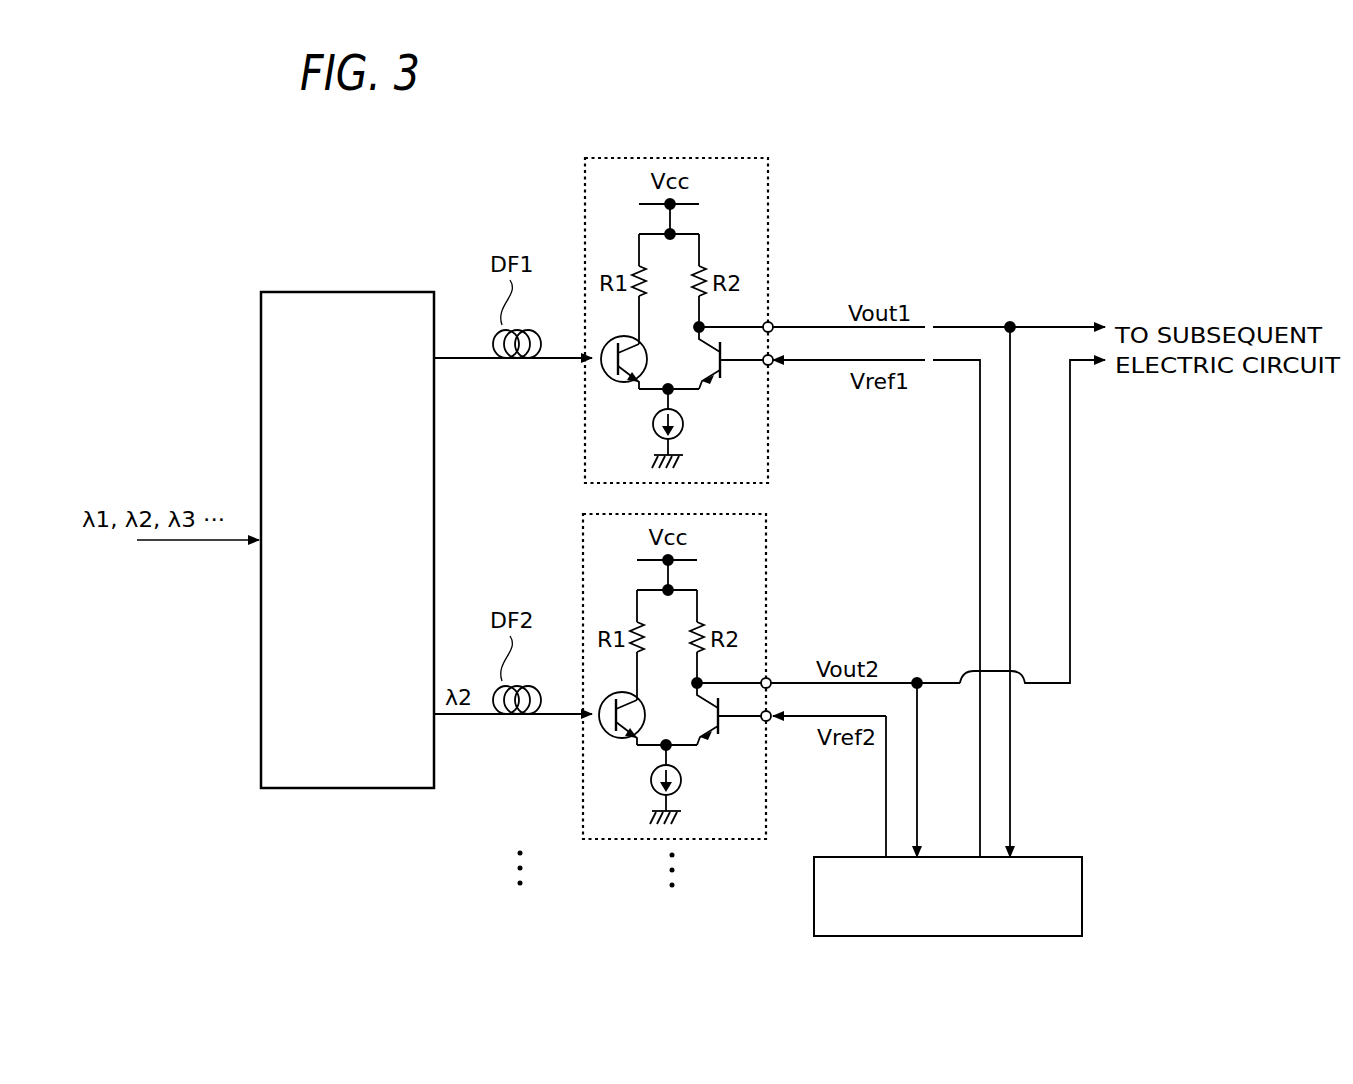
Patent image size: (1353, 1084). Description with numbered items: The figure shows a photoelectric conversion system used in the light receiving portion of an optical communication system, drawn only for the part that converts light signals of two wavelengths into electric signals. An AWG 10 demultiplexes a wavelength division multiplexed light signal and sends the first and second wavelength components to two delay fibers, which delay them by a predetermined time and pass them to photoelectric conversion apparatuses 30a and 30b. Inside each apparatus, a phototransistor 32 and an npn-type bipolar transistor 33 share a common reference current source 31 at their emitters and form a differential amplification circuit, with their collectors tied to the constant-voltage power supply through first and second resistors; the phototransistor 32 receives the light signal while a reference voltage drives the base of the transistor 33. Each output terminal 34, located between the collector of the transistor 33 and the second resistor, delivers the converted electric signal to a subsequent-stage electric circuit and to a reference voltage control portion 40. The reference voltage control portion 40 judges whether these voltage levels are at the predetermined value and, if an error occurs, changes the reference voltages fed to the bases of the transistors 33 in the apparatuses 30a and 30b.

The AWG 10 is at (259, 628).
The photoelectric conversion apparatus 30a is at (768, 166).
The photoelectric conversion apparatus 30b is at (766, 522).
The reference current source 31 is at (681, 780).
The phototransistor 32 is at (613, 737).
The npn-type bipolar transistor 33 is at (722, 728).
The output terminal 34 is at (767, 676).
The reference voltage control portion 40 is at (1082, 893).